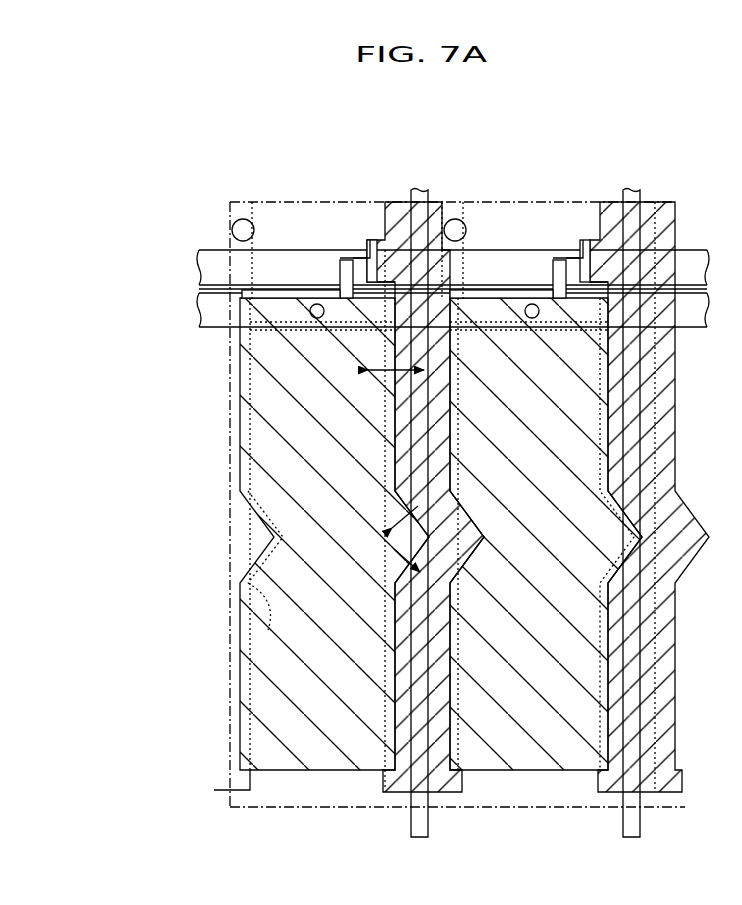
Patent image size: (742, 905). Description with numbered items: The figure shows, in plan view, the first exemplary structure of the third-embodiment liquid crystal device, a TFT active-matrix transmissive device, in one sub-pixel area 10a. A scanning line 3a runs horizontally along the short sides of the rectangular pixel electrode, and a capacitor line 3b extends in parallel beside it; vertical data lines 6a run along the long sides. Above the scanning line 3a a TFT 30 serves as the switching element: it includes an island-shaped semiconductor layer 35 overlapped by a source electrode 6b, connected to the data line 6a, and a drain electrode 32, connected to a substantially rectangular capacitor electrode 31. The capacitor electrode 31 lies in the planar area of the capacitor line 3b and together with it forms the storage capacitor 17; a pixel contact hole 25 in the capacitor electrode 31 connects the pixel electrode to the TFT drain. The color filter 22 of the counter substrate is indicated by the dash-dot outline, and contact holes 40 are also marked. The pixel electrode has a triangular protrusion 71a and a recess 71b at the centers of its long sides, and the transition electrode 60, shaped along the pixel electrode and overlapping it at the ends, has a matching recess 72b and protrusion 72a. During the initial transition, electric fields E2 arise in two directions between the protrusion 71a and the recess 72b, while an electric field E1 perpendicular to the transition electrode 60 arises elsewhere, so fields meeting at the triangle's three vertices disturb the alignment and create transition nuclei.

The pixel 10a is at (582, 140).
The color filter 22 is at (290, 200).
The scanning line 3a is at (206, 258).
The capacitor line 3b is at (202, 318).
The capacitor electrode 31 is at (240, 293).
The drain electrode 32 is at (330, 290).
The storage capacitor 17 is at (236, 323).
The data line 6a is at (429, 830).
The source electrode 6b is at (374, 242).
The TFT 30 is at (354, 254).
The semiconductor layer 35 is at (347, 258).
The contact hole 40 is at (243, 219).
The pixel contact hole 25 is at (312, 316).
The transition electrode 60 is at (677, 455).
The protrusion 71a is at (410, 513).
The recess 71b is at (248, 508).
The protrusion 72a is at (268, 590).
The recess 72b is at (396, 792).
The electric field E1 is at (382, 373).
The electric fields E2 is at (393, 549).